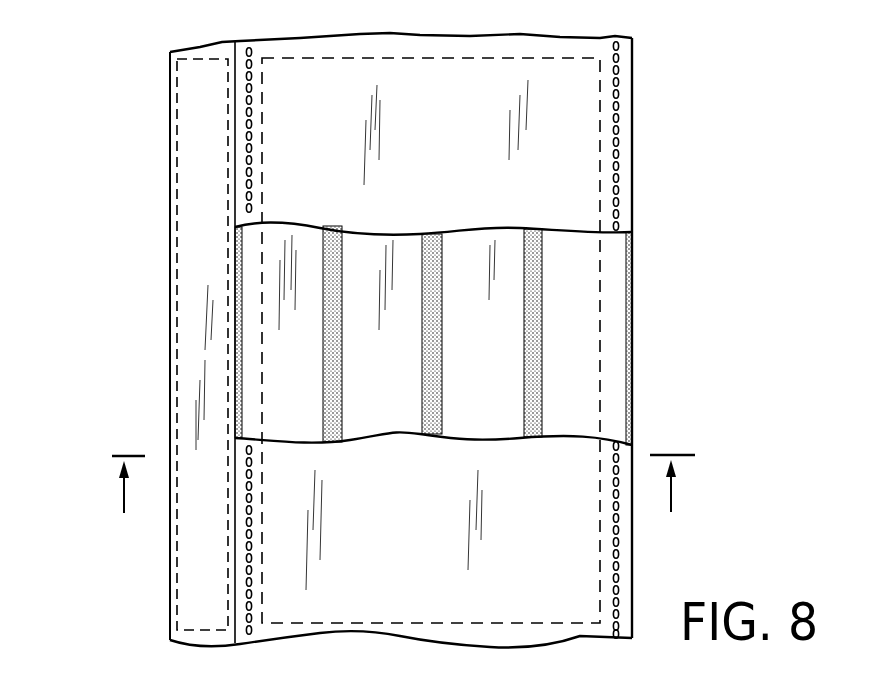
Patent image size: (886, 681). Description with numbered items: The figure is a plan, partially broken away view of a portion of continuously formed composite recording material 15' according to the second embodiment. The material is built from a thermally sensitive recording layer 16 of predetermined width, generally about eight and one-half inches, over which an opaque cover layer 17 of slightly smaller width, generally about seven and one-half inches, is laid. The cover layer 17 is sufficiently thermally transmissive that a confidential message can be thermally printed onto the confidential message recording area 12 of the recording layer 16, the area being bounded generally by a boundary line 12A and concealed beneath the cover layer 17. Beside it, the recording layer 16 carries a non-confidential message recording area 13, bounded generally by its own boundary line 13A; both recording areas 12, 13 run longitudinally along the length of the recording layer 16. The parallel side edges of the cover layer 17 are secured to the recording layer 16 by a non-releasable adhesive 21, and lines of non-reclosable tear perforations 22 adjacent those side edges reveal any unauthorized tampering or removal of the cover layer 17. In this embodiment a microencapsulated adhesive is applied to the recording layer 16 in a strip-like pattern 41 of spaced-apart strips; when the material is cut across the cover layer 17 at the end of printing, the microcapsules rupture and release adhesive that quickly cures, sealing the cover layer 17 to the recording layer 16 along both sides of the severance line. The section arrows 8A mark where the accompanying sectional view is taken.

The confidential message recording area 12 is at (279, 368).
The boundary line 12A is at (264, 276).
The non-confidential message recording area 13 is at (191, 156).
The boundary line 13A is at (176, 118).
The continuously formed composite recording material 15' is at (331, 340).
The thermally sensitive recording layer 16 is at (171, 238).
The opaque cover layer 17 is at (559, 187).
The non-releasable adhesive 21 is at (240, 317).
The lines of non-reclosable tear perforations 22 is at (249, 188).
The strip-like pattern 41 is at (327, 402).
The section line 8A- 8A is at (395, 511).